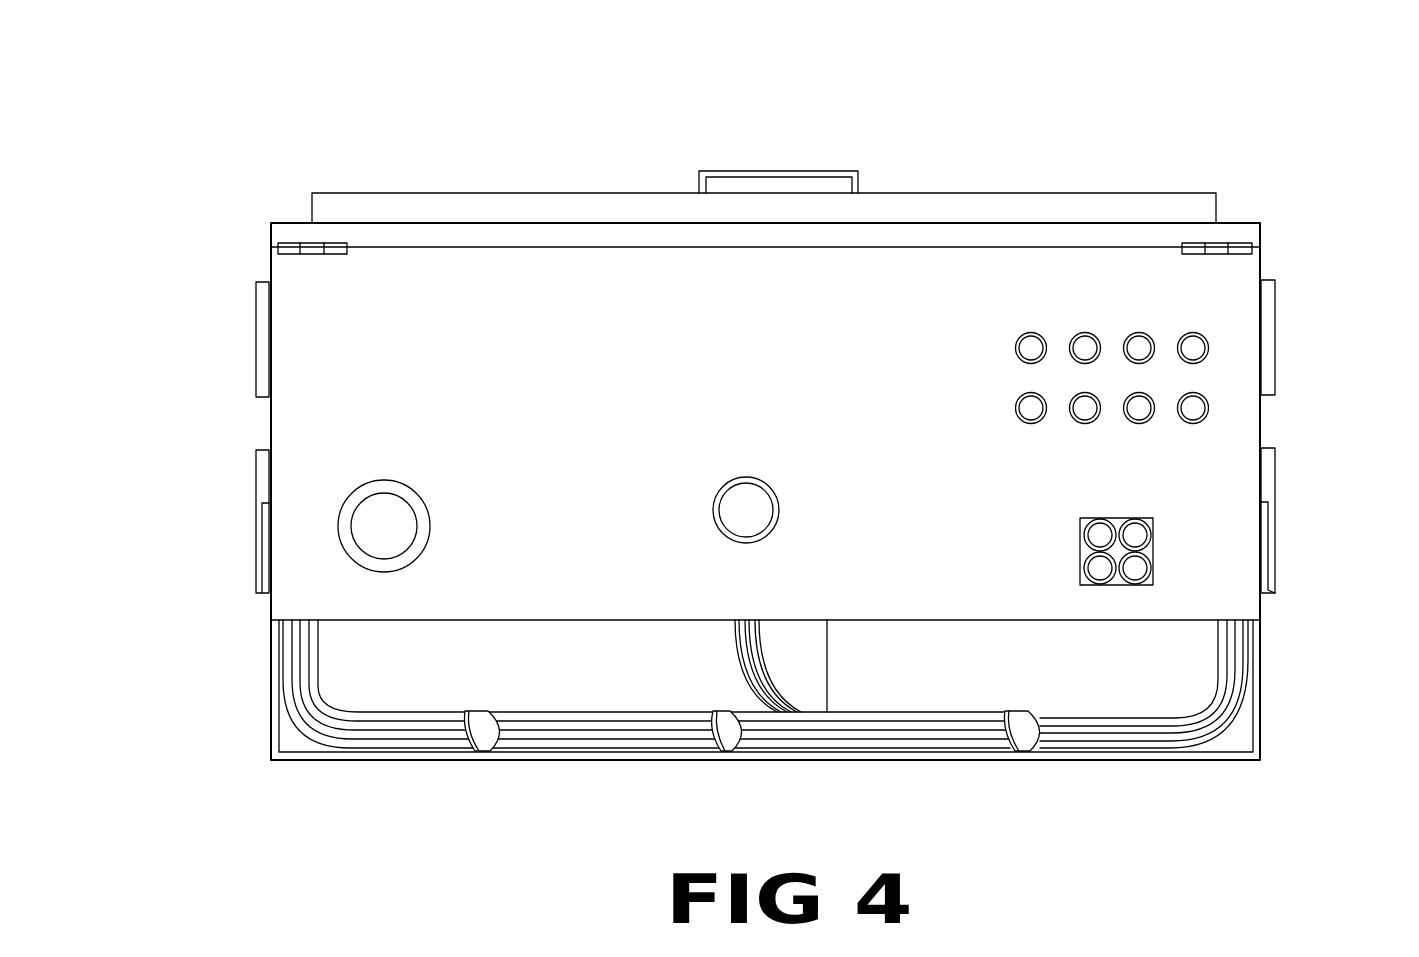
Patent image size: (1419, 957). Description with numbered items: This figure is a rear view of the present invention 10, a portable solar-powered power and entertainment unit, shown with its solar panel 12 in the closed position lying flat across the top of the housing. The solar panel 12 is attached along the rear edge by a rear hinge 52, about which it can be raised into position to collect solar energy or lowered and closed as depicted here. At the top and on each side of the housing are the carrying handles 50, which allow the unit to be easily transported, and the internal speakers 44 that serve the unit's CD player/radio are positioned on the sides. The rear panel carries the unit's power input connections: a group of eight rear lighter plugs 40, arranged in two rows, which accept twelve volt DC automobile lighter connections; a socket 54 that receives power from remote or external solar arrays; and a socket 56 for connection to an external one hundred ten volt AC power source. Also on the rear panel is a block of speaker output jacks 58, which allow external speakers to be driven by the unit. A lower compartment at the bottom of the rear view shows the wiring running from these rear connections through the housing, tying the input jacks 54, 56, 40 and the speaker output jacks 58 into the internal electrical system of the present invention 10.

The present invention 10 is at (1268, 127).
The solar panel 12 is at (580, 193).
The rear lighter plugs 40 is at (1040, 393).
The internal speaker 44 is at (256, 323).
The carrying handle 50 is at (763, 172).
The rear hinge 52 is at (318, 243).
The socket for an external solar panel 54 is at (770, 543).
The socket for external AC power source 56 is at (384, 567).
The speaker output jacks 58 is at (1119, 583).